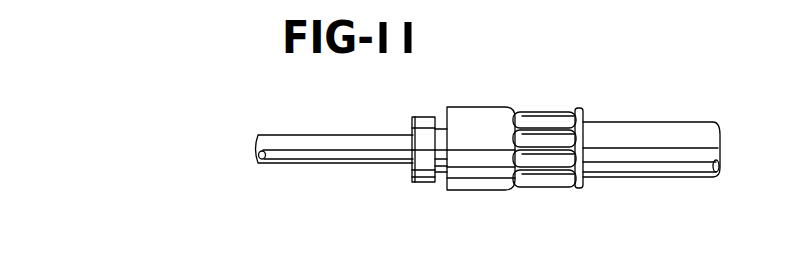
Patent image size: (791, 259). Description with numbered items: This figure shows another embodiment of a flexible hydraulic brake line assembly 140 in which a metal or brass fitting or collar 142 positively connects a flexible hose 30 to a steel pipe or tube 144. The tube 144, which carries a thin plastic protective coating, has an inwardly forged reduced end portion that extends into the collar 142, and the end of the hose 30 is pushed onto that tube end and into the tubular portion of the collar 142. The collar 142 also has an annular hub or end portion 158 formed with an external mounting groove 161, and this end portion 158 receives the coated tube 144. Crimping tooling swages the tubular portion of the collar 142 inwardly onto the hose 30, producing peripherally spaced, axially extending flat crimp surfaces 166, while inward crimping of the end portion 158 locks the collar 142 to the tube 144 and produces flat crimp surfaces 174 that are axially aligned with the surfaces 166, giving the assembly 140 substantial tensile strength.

The flexible hose 30 is at (644, 115).
The flexible hydraulic brake line assembly 140 is at (545, 82).
The fitting or collar 142 is at (482, 102).
The steel pipe or tube 144 is at (291, 127).
The annular hub or end portion 158 is at (424, 116).
The external mounting groove 161 is at (442, 181).
The flat crimp surfaces 166 is at (549, 158).
The flat crimp surfaces 174 is at (418, 162).